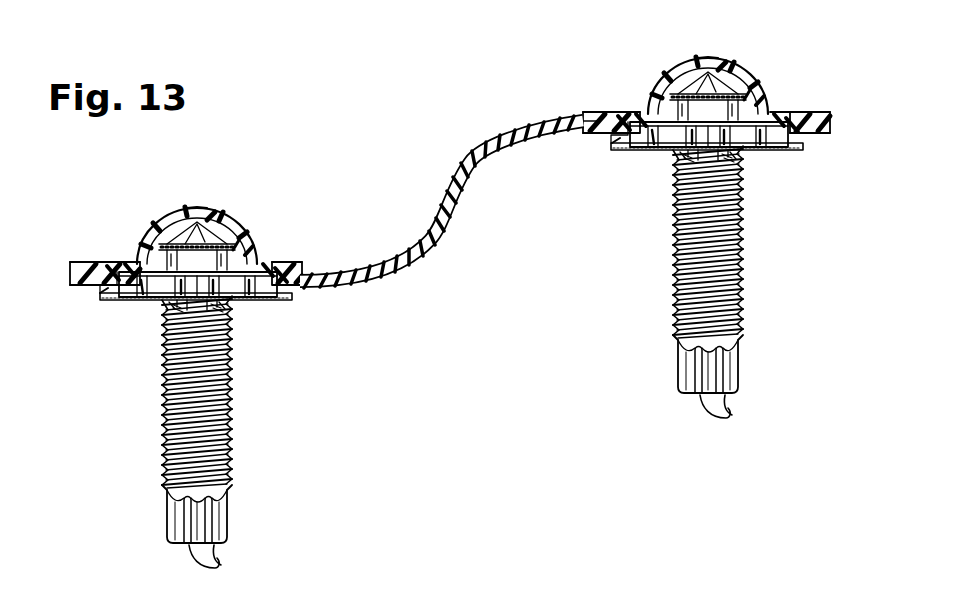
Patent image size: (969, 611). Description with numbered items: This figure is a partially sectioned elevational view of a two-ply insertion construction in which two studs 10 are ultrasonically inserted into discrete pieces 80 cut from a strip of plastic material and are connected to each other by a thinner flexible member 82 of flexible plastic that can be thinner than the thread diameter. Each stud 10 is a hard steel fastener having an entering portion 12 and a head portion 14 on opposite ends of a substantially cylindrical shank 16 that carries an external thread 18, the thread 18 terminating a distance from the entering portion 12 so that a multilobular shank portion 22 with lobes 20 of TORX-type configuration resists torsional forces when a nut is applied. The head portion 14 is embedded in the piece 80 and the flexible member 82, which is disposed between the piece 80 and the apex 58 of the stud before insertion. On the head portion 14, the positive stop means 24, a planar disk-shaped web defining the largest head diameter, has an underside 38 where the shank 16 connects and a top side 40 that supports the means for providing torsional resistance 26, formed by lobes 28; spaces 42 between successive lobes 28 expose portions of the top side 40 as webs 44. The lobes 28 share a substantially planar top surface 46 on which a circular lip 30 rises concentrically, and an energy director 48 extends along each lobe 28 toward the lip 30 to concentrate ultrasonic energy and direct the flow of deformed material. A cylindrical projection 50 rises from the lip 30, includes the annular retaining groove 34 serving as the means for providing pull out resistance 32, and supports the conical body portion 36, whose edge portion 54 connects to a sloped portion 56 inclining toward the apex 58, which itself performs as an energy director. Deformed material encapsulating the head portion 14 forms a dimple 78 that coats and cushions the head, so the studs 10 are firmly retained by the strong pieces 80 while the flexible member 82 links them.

The stud 10 is at (118, 412).
The entering portion 12 is at (168, 490).
The head portion 14 is at (158, 305).
The shank 16 is at (162, 445).
The external thread 18 is at (232, 412).
The lobes 20 is at (216, 560).
The multilobular shank portion 22 is at (168, 536).
The positive stop means 24 is at (282, 298).
The means for providing torsional resistance 26 is at (300, 262).
The lobes 28 is at (130, 275).
The lip 30 is at (143, 262).
The means for providing pull out resistance 32 is at (240, 238).
The retaining groove 34 is at (152, 258).
The body portion 36 is at (162, 236).
The underside 38 is at (138, 300).
The top side 40 is at (108, 290).
The spaces 42 is at (205, 318).
The webs 44 is at (305, 275).
The top surface 46 is at (268, 262).
The energy director 48 is at (118, 283).
The projection 50 is at (250, 255).
The edge portion 54 is at (226, 240).
The sloped portion 56 is at (176, 232).
The apex 58 is at (207, 225).
The dimple 78 is at (193, 207).
The pieces 80 is at (72, 266).
The flexible member 82 is at (462, 182).